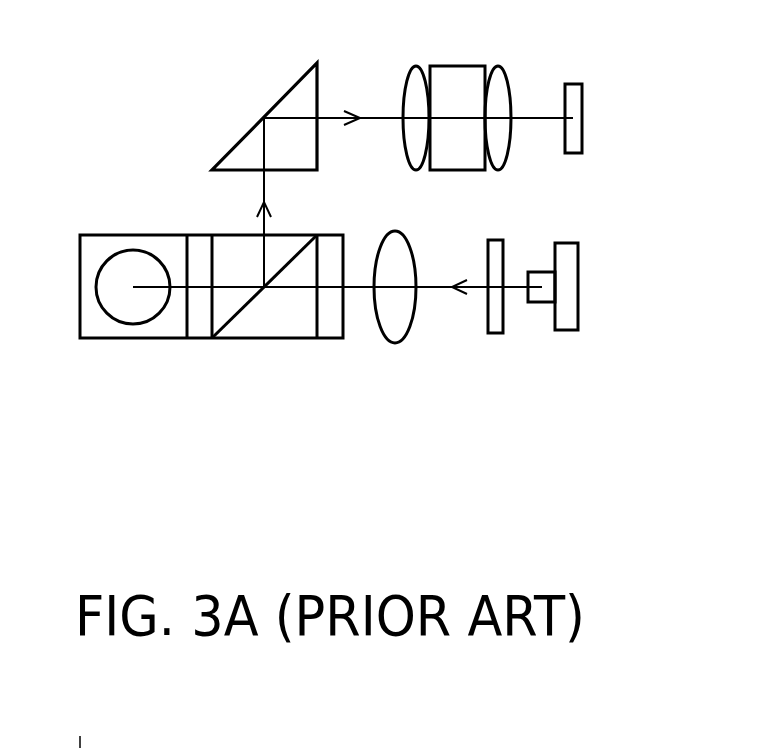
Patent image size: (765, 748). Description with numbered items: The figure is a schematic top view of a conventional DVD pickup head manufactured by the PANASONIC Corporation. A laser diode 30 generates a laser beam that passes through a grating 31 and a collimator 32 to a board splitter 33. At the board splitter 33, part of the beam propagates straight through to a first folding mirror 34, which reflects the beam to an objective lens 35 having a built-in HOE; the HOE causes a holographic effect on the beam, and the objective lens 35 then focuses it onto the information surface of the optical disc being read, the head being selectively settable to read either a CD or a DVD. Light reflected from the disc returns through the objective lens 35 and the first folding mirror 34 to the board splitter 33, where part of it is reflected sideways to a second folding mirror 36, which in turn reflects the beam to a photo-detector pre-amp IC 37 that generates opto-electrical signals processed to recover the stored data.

The laser diode 30 is at (570, 331).
The grating 31 is at (495, 334).
The collimator 32 is at (402, 343).
The board splitter 33 is at (265, 340).
The first folding mirror 34 is at (131, 339).
The objective lens 35 is at (100, 264).
The second folding mirror 36 is at (295, 82).
The photo-detector pre-amp IC 37 is at (582, 97).